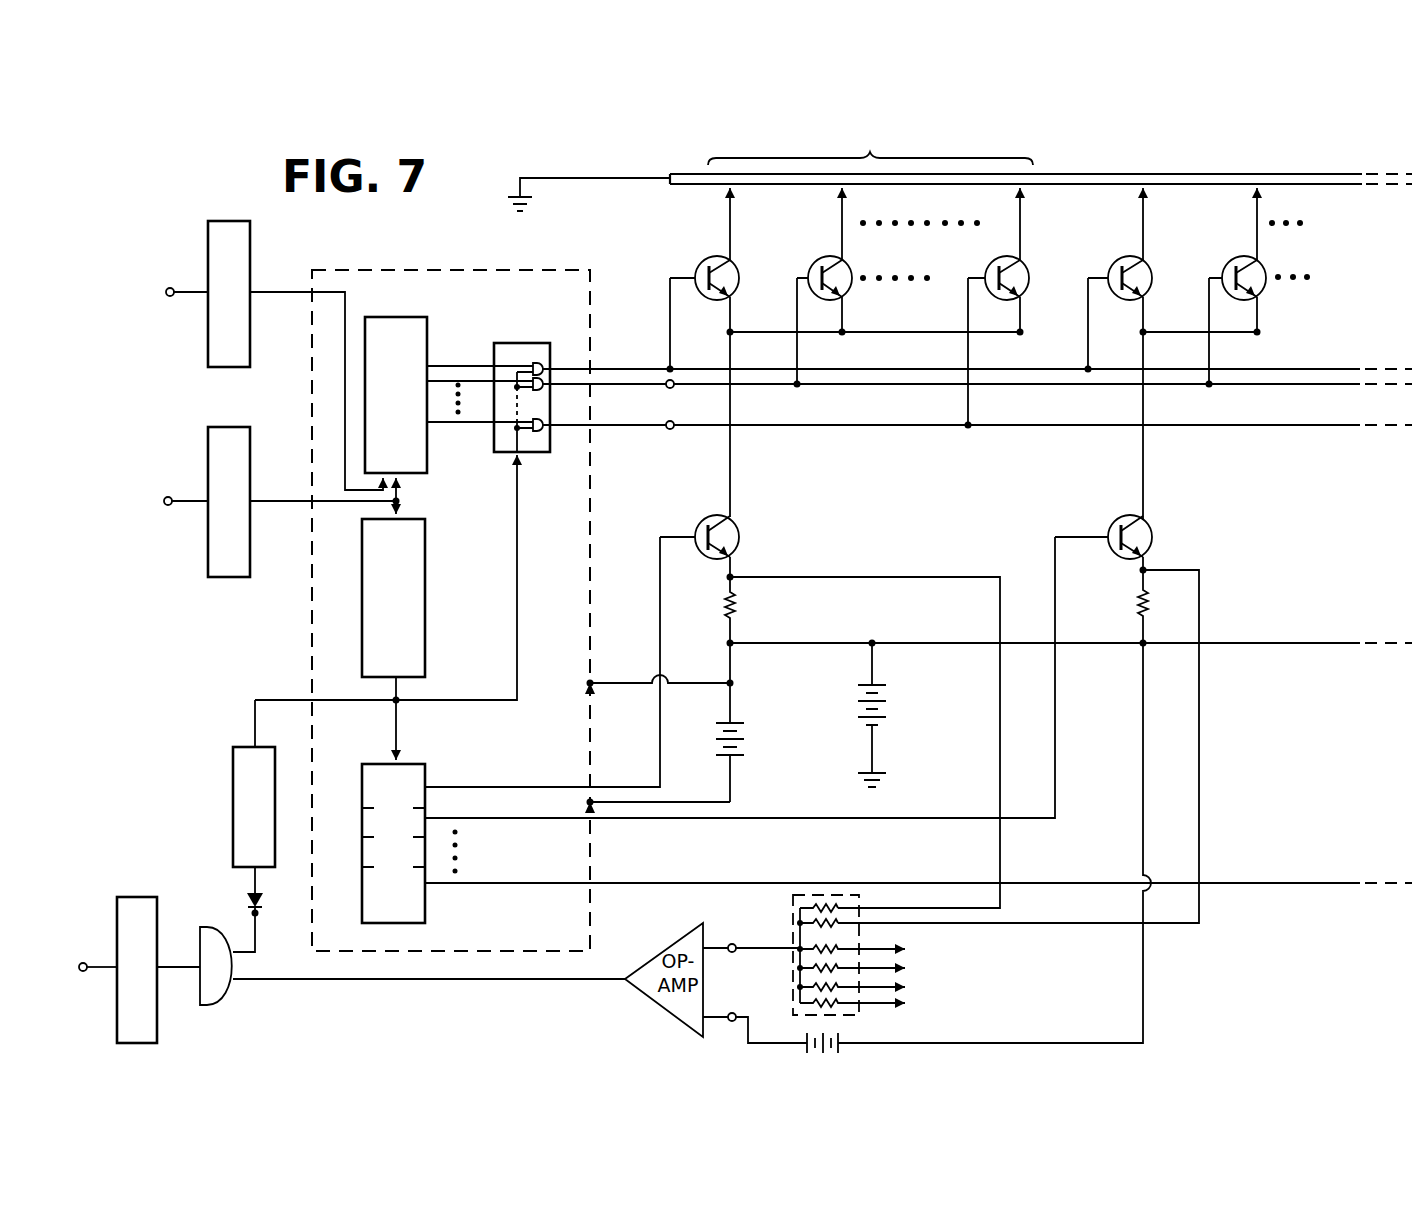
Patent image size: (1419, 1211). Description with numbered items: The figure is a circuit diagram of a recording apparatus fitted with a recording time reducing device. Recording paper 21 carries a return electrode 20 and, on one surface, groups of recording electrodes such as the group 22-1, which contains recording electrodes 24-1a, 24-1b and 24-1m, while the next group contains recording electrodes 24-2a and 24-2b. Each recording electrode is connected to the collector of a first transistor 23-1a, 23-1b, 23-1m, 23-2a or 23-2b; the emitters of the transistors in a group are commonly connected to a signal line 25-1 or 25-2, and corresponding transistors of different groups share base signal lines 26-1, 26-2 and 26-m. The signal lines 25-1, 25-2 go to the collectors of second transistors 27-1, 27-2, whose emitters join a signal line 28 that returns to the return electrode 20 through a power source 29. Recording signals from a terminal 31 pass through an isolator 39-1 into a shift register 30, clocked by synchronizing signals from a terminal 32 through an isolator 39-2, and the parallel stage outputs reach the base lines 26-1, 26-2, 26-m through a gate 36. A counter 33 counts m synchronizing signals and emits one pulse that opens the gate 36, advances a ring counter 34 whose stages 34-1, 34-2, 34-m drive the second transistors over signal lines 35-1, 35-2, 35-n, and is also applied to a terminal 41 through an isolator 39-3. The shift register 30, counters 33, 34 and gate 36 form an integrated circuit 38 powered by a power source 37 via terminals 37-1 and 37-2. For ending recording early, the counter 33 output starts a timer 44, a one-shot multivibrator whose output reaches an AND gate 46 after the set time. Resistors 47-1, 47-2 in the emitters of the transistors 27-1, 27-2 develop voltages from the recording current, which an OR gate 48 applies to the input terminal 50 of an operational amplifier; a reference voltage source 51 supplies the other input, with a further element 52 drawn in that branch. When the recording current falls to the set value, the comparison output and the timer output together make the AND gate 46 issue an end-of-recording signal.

The return electrode 20 is at (1178, 173).
The recording paper 21 is at (690, 186).
The group of recording electrodes 22-1 is at (870, 148).
The first transistor 23-1a is at (740, 242).
The first transistor 23-1b is at (855, 242).
The first transistor 23-1m is at (1035, 242).
The first transistor 23-2a is at (1155, 242).
The first transistor 23-2b is at (1270, 242).
The recording electrode 24-1a is at (732, 215).
The recording electrode 24-1b is at (844, 205).
The recording electrode 24-1m is at (1073, 262).
The recording electrode 24-2a is at (1145, 207).
The recording electrode 24-2b is at (1259, 207).
The signal line 25-1 is at (730, 460).
The signal line 25-2 is at (1143, 462).
The common signal line 26-1 is at (1329, 369).
The common signal line 26-2 is at (1300, 384).
The common signal line 26-m is at (1290, 425).
The second transistor 27-1 is at (736, 520).
The second transistor 27-2 is at (1150, 520).
The signal line 28 is at (1278, 643).
The power source 29 is at (886, 712).
The shift register 30 is at (427, 322).
The terminal 31 is at (166, 292).
The terminal 32 is at (164, 499).
The counter 33 is at (425, 532).
The counter 34 is at (351, 848).
The counter stage 34-1 is at (362, 784).
The counter stage 34-2 is at (362, 823).
The counter stage 34-m is at (362, 890).
The signal line 35-1 is at (660, 647).
The signal line 35-2 is at (1055, 690).
The signal line 35-n is at (1288, 883).
The gate 36 is at (530, 343).
The power source 37 is at (746, 740).
The terminal 37-1 is at (588, 804).
The terminal 37-2 is at (588, 685).
The integrated circuit 38 is at (443, 270).
The isolator 39-1 is at (250, 240).
The isolator 39-2 is at (208, 445).
The isolator 39-3 is at (140, 897).
The terminal 41 is at (82, 963).
The timer 44 is at (233, 770).
The AND gate 46 is at (210, 934).
The resistor 47-1 is at (736, 602).
The resistor 47-2 is at (1140, 603).
The OR gate 48 is at (793, 971).
The input terminal 50 is at (733, 942).
The reference voltage source 51 is at (731, 1021).
The battery 52 is at (840, 1040).